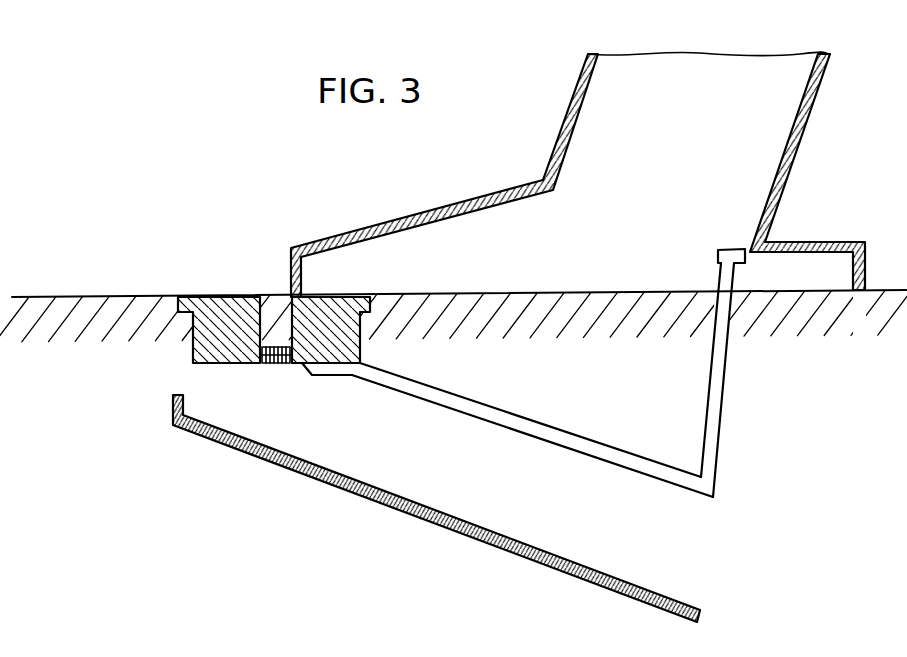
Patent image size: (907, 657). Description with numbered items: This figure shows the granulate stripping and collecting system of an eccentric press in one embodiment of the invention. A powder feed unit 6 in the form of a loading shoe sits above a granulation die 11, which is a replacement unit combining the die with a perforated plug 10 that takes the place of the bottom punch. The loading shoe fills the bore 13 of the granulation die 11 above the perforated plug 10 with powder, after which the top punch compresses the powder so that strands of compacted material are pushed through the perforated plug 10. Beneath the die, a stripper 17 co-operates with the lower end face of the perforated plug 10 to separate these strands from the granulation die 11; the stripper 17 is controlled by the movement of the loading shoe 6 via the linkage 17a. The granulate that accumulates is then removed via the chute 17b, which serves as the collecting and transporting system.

The powder feed unit 6 is at (813, 113).
The perforated plug 10 is at (270, 364).
The granulation die 11 is at (220, 313).
The bore 13 is at (288, 315).
The stripper 17 is at (325, 372).
The linkage 17a is at (724, 373).
The chute 17b is at (327, 483).